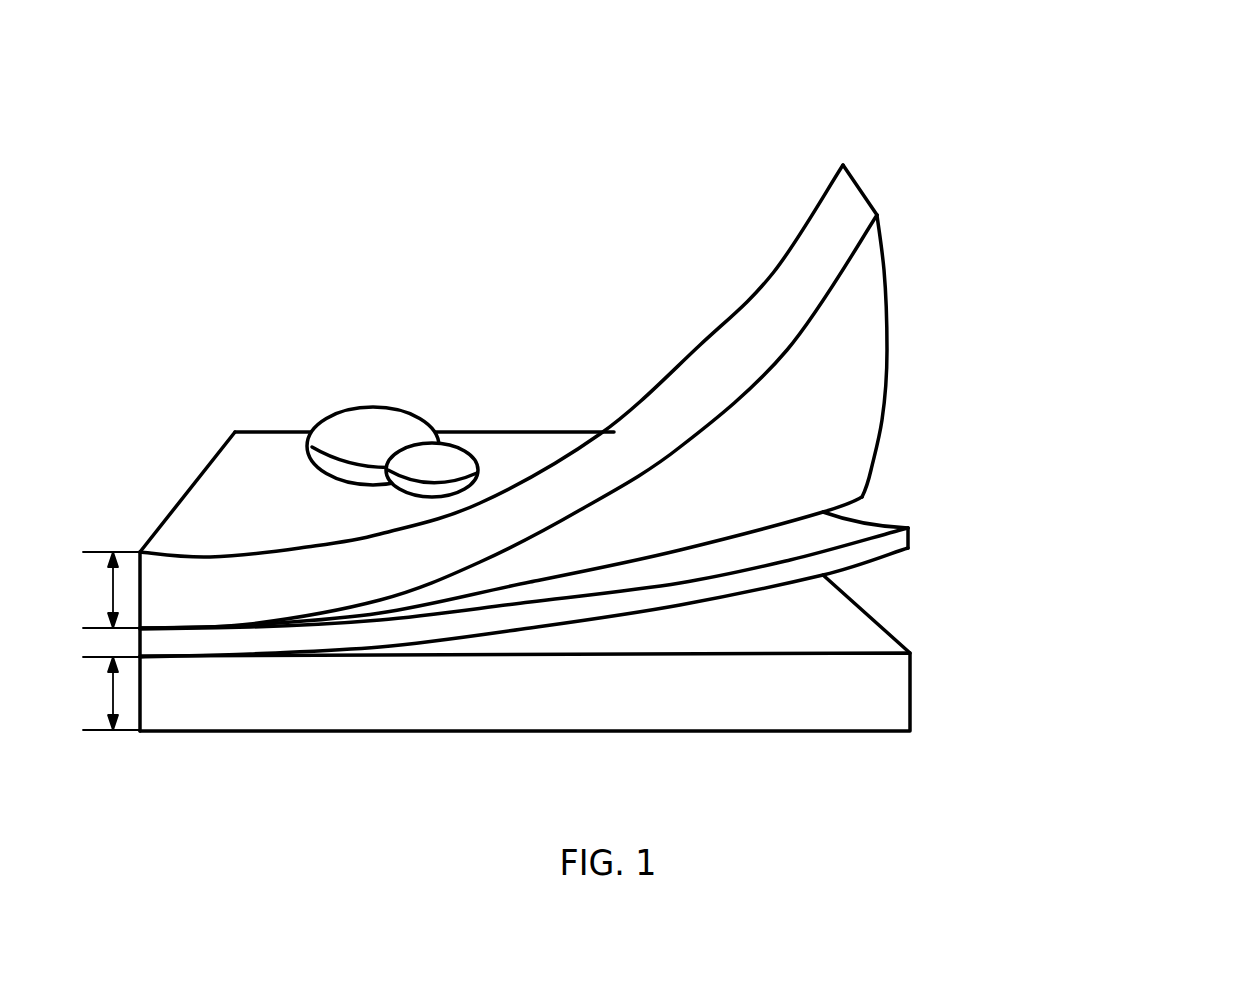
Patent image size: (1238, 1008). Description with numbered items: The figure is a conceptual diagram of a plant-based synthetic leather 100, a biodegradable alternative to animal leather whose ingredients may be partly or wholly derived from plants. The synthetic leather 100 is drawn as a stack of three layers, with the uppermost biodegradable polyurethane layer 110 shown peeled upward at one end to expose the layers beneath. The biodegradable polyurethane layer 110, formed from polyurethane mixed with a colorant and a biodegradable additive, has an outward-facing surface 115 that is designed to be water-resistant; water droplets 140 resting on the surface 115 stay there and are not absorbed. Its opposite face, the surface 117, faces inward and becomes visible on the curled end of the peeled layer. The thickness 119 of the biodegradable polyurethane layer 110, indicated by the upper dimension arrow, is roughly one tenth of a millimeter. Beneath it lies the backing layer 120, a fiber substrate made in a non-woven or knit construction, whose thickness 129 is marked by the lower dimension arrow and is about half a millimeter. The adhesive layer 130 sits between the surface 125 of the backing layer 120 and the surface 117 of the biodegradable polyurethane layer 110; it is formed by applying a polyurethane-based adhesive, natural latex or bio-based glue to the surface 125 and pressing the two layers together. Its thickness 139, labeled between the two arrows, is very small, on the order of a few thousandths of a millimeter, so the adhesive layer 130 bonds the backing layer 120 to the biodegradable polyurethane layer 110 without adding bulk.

The synthetic leather 100 is at (553, 67).
The biodegradable polyurethane layer 110 is at (649, 430).
The surface 115 is at (773, 273).
The surface 117 is at (847, 420).
The thickness 119 is at (101, 590).
The backing layer 120 is at (651, 653).
The surface 125 is at (857, 638).
The thickness 129 is at (101, 693).
The adhesive layer 130 is at (887, 545).
The thickness 139 is at (96, 643).
The water droplets 140 is at (377, 438).